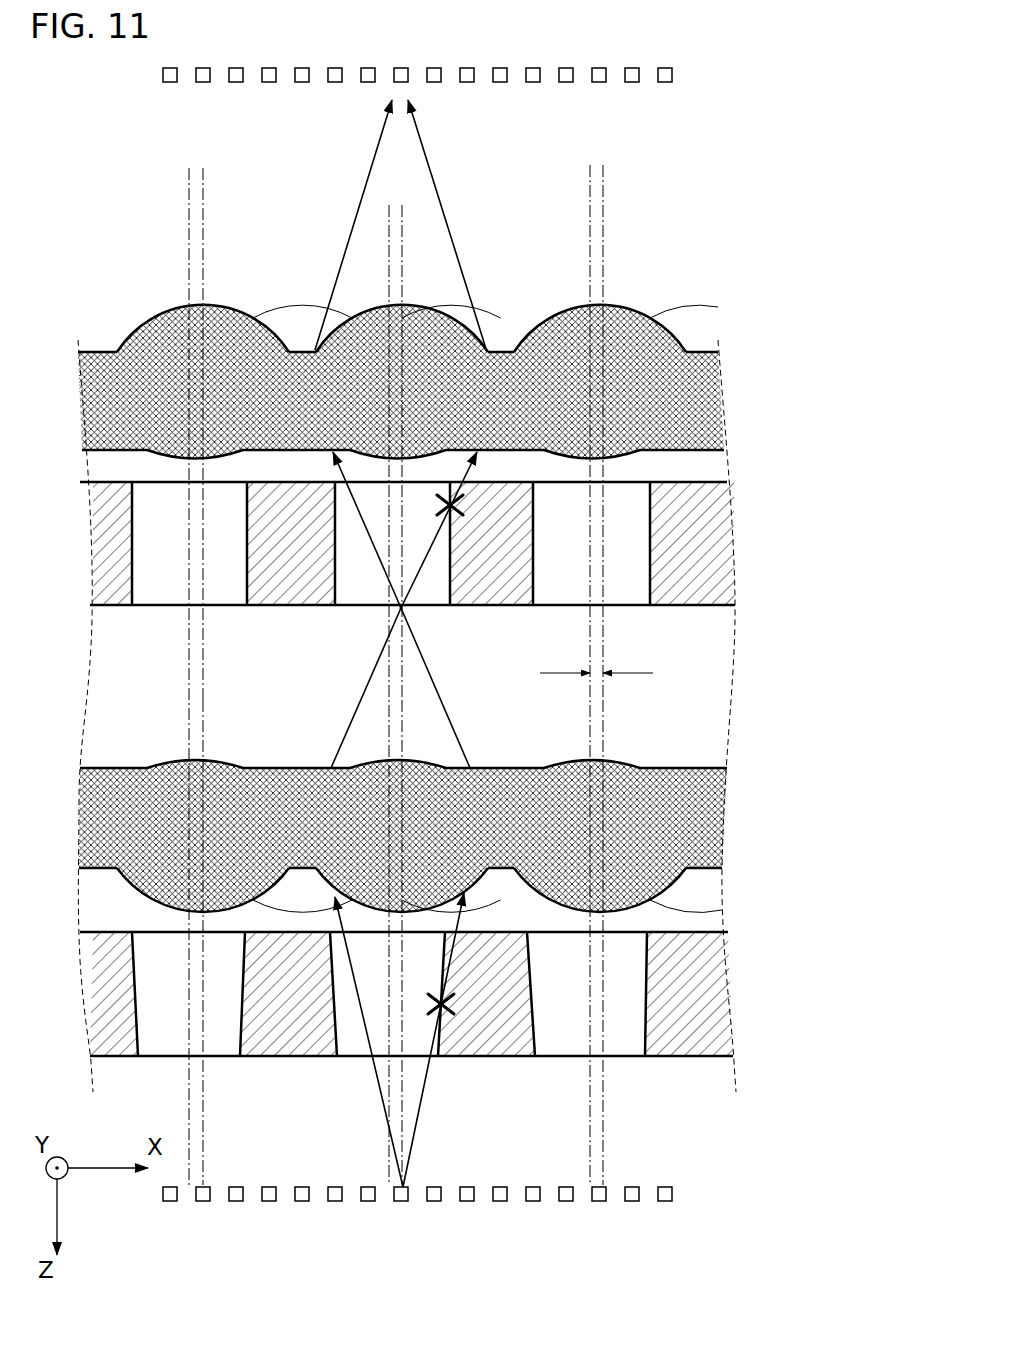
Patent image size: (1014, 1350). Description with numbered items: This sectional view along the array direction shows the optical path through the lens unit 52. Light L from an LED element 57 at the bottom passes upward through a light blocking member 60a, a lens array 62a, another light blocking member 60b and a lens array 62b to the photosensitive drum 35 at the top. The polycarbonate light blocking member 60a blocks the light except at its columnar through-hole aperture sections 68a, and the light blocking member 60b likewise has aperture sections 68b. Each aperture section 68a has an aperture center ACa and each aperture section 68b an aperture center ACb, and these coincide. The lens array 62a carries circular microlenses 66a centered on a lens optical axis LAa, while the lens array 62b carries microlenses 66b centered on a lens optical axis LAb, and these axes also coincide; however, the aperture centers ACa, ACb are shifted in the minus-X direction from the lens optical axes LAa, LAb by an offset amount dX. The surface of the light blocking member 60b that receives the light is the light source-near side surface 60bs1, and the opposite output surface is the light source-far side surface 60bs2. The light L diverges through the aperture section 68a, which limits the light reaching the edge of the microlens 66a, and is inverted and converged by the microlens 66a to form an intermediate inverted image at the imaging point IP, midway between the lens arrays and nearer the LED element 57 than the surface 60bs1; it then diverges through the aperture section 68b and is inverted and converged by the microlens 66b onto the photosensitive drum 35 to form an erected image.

The photosensitive drum 35 is at (675, 75).
The lens unit 52 is at (690, 195).
The LED element 57 is at (675, 1194).
The light blocking member 60a is at (690, 1033).
The light blocking member 60b is at (697, 515).
The light-blocking-member light source-near side surface 60bs1 is at (112, 605).
The light-blocking-member light source-far side surface 60bs2 is at (113, 480).
The lens array 62a is at (672, 790).
The lens array 62b is at (672, 407).
The microlens 66a is at (645, 892).
The microlens 66b is at (645, 312).
The aperture section 68a is at (623, 953).
The aperture section 68b is at (627, 588).
The lens optical axis LAa is at (605, 843).
The lens optical axis LAb is at (600, 372).
The aperture center ACa is at (600, 990).
The aperture center ACb is at (612, 496).
The offset amount dX is at (606, 672).
The imaging point IP is at (402, 610).
The light L is at (423, 1097).